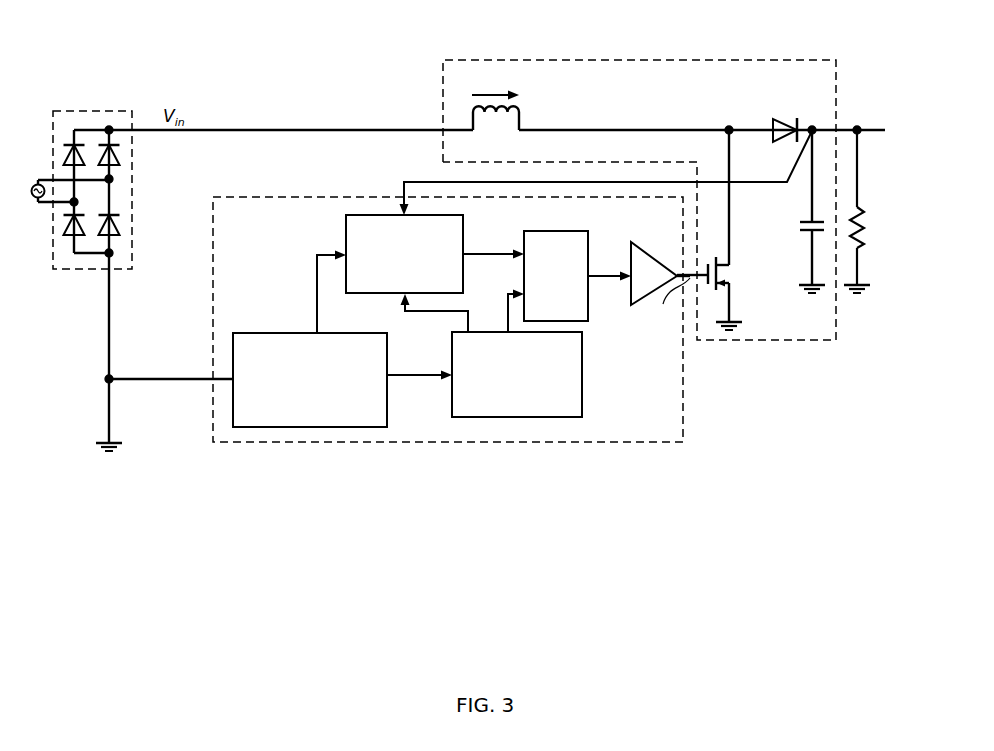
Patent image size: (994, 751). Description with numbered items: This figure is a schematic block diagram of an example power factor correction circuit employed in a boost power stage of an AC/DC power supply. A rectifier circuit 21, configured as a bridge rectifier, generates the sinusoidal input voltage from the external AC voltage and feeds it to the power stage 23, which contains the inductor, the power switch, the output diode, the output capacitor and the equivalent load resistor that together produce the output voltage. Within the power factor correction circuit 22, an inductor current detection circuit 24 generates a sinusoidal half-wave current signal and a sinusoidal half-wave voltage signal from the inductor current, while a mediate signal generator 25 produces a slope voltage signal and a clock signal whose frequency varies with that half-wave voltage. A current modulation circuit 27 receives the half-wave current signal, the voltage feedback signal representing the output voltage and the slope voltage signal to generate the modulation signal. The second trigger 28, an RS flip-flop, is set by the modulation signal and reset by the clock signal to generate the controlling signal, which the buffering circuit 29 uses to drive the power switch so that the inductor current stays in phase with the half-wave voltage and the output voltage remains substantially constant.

The rectifier circuit 21 is at (82, 111).
The power factor correction circuit 22 is at (213, 290).
The power stage 23 is at (683, 60).
The inductor current detection circuit 24 is at (310, 380).
The mediate signal generator 25 is at (517, 374).
The current modulation circuit 27 is at (404, 254).
The second trigger 28 is at (556, 276).
The buffering circuit 29 is at (660, 281).